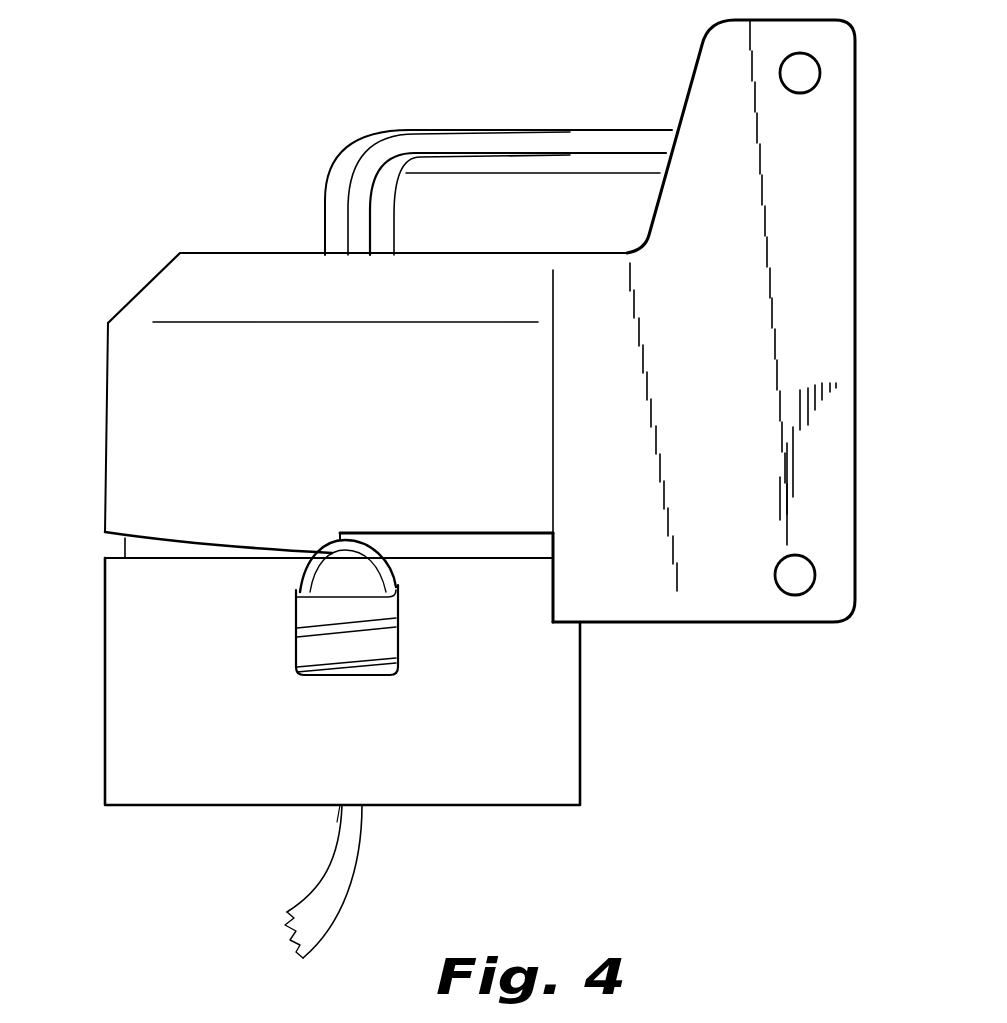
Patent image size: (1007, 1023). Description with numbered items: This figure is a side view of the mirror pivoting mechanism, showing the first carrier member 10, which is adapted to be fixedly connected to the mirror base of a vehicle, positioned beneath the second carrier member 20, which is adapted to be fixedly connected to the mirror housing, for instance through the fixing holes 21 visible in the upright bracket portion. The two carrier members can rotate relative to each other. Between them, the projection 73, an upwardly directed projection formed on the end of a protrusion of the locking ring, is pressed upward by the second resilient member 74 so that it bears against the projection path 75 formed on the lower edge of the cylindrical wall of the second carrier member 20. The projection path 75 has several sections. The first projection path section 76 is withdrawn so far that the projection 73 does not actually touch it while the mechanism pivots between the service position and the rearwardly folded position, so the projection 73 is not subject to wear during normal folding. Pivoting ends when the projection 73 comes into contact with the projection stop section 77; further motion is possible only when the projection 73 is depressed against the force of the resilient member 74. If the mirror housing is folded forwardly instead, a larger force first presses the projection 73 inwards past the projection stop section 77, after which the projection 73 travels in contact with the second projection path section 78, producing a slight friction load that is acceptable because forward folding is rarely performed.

The first carrier member 10 is at (102, 695).
The second carrier member 20 is at (107, 393).
The fixing holes 21 is at (820, 73).
The projection 73 is at (370, 577).
The second resilient member 74 is at (365, 645).
The projection path 75 is at (113, 538).
The first projection path section 76 is at (403, 530).
The projection stop section 77 is at (325, 547).
The second projection path section 78 is at (173, 542).